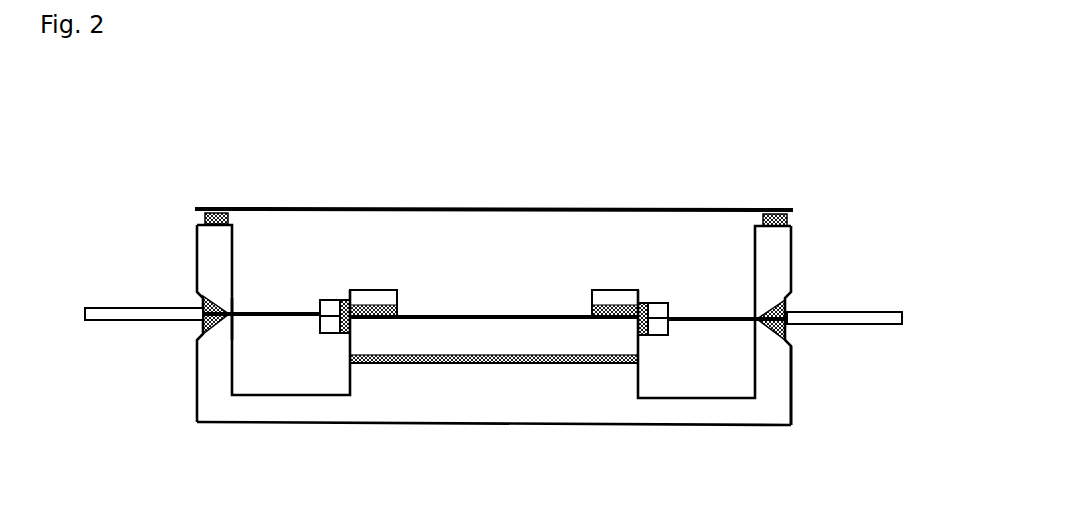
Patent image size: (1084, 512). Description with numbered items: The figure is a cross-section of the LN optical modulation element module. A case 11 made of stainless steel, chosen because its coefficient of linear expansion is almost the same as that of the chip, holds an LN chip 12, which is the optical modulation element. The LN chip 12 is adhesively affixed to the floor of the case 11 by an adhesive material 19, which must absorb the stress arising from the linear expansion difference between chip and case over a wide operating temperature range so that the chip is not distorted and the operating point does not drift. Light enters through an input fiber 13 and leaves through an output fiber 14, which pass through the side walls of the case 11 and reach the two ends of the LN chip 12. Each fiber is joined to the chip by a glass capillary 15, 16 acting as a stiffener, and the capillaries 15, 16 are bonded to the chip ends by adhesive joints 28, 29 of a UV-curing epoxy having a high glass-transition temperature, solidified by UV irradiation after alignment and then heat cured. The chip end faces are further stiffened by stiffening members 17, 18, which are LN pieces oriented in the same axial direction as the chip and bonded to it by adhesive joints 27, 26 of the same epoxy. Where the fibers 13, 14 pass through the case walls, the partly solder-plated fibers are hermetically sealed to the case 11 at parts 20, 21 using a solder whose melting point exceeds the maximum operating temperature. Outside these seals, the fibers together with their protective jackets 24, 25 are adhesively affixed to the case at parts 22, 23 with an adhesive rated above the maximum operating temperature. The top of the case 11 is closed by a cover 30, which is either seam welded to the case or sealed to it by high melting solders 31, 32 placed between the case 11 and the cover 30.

The case 11 is at (488, 382).
The LN chip 12 is at (487, 337).
The input fiber 13 is at (280, 318).
The output fiber 14 is at (695, 322).
The capillary 15 is at (327, 302).
The capillary 16 is at (662, 312).
The stiffening member 17 is at (370, 298).
The stiffening member 18 is at (620, 298).
The adhesive material 19 is at (415, 365).
The hermetically sealed part 20 is at (223, 322).
The hermetically sealed part 21 is at (792, 385).
The adhesively affixed part 22 is at (200, 303).
The adhesively affixed part 23 is at (787, 333).
The jacket 24 is at (132, 315).
The jacket 25 is at (870, 320).
The adhesive joint 26 is at (613, 322).
The adhesive joint 27 is at (400, 307).
The adhesive joint 28 is at (342, 333).
The adhesive joint 29 is at (640, 335).
The cover 30 is at (500, 208).
The high melting solder 31 is at (230, 208).
The high melting solder 32 is at (788, 222).